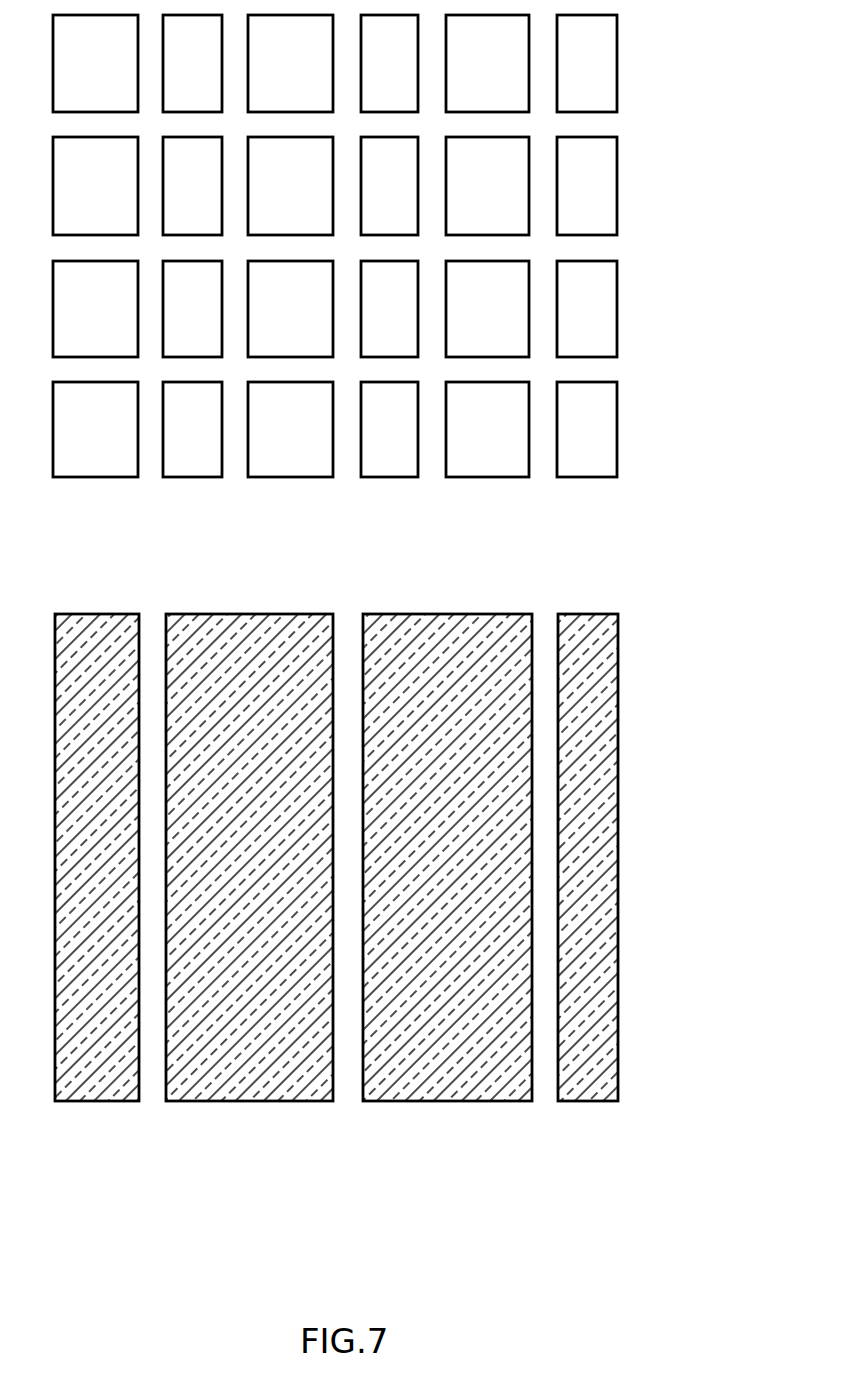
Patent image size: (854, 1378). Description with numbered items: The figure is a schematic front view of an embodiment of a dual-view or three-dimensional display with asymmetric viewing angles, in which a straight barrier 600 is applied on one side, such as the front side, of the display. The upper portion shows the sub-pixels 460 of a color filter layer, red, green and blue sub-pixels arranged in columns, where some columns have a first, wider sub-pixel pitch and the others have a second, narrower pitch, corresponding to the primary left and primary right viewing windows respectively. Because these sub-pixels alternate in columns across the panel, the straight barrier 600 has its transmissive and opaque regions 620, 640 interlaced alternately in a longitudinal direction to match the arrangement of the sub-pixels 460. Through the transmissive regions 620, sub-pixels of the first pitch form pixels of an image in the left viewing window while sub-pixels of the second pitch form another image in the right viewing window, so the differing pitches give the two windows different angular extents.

The sub-pixels 460 is at (655, 17).
The straight barrier 600 is at (426, 857).
The transmissive regions 620 is at (157, 632).
The opaque regions 640 is at (112, 1085).